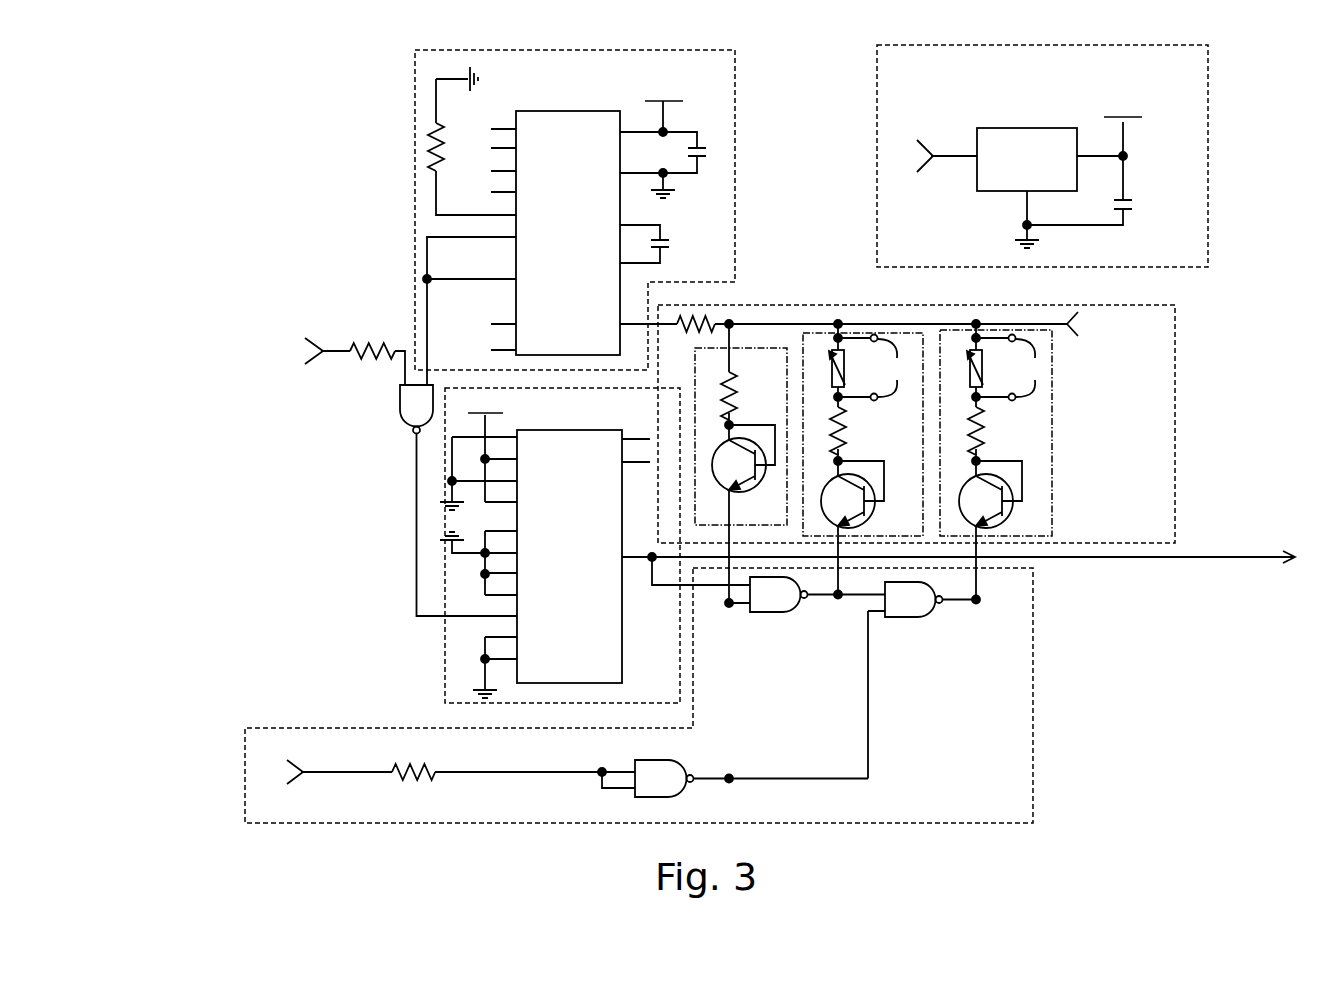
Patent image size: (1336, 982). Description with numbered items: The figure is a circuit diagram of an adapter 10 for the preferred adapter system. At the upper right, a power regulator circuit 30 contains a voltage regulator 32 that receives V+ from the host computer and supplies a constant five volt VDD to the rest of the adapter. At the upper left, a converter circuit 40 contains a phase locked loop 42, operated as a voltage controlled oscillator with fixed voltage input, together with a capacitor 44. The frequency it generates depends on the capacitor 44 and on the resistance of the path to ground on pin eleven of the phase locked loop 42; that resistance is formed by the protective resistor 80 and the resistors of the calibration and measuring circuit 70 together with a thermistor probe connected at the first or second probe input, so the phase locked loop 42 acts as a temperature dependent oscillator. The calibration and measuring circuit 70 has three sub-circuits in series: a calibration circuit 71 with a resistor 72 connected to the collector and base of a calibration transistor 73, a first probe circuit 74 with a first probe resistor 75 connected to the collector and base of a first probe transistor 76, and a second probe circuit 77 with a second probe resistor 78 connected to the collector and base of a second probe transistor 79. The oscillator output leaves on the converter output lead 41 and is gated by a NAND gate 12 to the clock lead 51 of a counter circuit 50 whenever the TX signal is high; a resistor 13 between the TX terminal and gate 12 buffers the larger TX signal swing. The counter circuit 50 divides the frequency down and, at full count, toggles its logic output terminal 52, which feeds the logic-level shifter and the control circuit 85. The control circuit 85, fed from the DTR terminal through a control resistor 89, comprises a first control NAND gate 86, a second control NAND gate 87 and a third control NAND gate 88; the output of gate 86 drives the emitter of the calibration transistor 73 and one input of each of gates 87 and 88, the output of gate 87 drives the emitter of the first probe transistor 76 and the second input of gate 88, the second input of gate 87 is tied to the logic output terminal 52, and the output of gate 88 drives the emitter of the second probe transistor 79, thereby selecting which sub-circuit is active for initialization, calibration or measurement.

The adapter 10 is at (803, 34).
The gate 12 is at (398, 405).
The resistor 13 is at (372, 350).
The power regulator circuit 30 is at (1210, 110).
The voltage regulator 32 is at (1033, 128).
The converter circuit 40 is at (415, 110).
The converter output lead 41 is at (428, 332).
The phase locked loop 42 is at (566, 110).
The capacitor 44 is at (670, 250).
The counter circuit 50 is at (445, 683).
The clock lead 51 is at (473, 617).
The logic output terminal 52 is at (1111, 555).
The calibration and measuring circuit 70 is at (1178, 338).
The calibration circuit 71 is at (775, 345).
The resistor 72 is at (738, 396).
The calibration transistor 73 is at (738, 490).
The first probe circuit 74 is at (898, 332).
The first probe resistor 75 is at (843, 438).
The first probe transistor 76 is at (876, 513).
The second probe circuit 77 is at (942, 330).
The second probe resistor 78 is at (982, 438).
The second probe transistor 79 is at (1015, 513).
The resistor 80 is at (697, 305).
The control circuit 85 is at (1035, 640).
The first control NAND gate 86 is at (674, 761).
The second control NAND gate 87 is at (768, 613).
The third control NAND gate 88 is at (903, 617).
The control resistor 89 is at (417, 766).